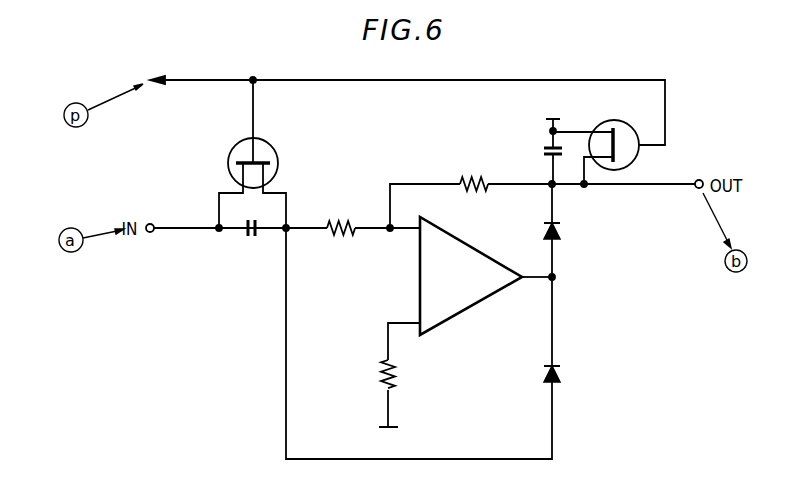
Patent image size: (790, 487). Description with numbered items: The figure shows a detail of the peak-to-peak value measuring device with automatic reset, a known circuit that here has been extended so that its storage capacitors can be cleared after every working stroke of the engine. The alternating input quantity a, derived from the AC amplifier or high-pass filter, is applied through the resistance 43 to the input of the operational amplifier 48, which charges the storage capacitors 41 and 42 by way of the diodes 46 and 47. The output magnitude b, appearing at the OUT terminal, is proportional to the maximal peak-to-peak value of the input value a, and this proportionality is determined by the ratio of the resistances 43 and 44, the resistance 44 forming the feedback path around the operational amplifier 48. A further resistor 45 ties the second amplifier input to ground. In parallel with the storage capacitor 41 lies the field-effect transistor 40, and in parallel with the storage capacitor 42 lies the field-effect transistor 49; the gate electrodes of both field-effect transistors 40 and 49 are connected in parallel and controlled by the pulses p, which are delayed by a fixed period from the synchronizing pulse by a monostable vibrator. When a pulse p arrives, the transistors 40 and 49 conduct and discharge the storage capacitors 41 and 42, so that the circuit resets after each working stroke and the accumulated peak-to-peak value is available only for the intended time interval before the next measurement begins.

The field-effect transistor 40 is at (268, 154).
The storage capacitor 41 is at (252, 234).
The storage capacitor 42 is at (543, 150).
The resistance 43 is at (330, 220).
The resistance 44 is at (463, 181).
The resistor R 45 is at (397, 374).
The diode 46 is at (561, 232).
The diode 47 is at (561, 375).
The operational amplifier 48 is at (482, 271).
The field-effect transistor 49 is at (622, 135).